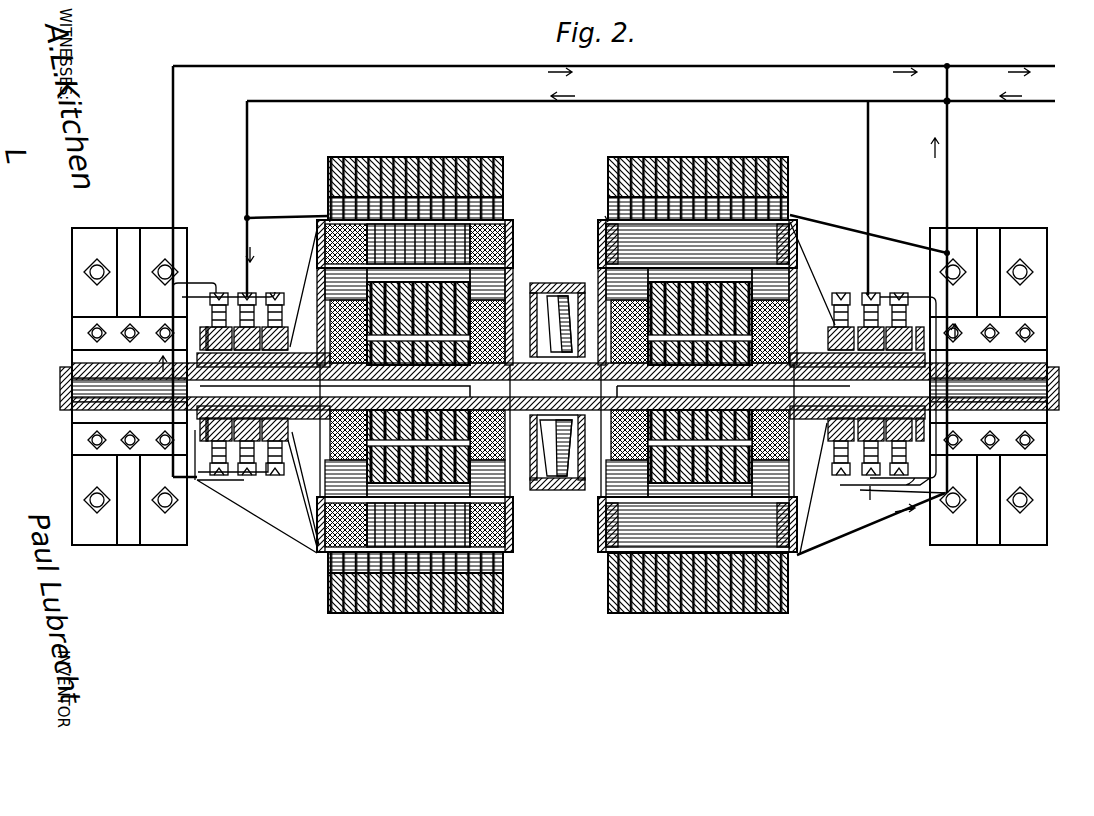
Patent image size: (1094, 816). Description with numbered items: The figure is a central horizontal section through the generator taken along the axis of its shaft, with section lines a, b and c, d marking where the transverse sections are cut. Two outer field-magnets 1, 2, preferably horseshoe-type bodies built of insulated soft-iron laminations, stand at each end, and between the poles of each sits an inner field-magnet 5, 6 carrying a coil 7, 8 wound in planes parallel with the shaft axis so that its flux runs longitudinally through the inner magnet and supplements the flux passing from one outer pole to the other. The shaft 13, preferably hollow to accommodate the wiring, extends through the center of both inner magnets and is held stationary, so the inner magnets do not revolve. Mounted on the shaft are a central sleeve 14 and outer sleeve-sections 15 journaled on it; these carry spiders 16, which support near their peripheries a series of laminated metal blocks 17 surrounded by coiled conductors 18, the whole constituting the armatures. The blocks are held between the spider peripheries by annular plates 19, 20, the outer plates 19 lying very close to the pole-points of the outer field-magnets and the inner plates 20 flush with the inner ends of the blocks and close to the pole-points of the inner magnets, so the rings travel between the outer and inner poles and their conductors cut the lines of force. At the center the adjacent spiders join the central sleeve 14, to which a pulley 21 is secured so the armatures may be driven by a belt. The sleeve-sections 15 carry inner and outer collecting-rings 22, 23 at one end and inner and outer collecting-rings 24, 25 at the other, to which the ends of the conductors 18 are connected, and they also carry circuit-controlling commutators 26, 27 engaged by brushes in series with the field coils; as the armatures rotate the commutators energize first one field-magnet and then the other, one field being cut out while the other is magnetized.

The outer field-magnet 1 is at (698, 160).
The outer field-magnet 2 is at (448, 160).
The inner field-magnet 5 is at (600, 285).
The inner field-magnet 6 is at (470, 292).
The coil 7 is at (645, 320).
The coil 8 is at (490, 283).
The shaft 13 is at (60, 388).
The central sleeve 14 is at (572, 293).
The outer sleeve-section 15 is at (318, 362).
The spider 16 is at (325, 300).
The laminated block 17 is at (792, 208).
The conductor 18 is at (797, 238).
The outer annular plate 19 is at (330, 220).
The inner annular plate 20 is at (325, 250).
The pulley 21 is at (560, 480).
The inner collecting-ring 22 is at (246, 294).
The outer collecting-ring 23 is at (278, 302).
The inner collecting-ring 24 is at (843, 327).
The outer collecting-ring 25 is at (897, 300).
The commutator 26 is at (205, 340).
The commutator 27 is at (910, 438).
The section line a is at (393, 139).
The section line b is at (371, 632).
The section line c is at (233, 256).
The section line d is at (225, 521).